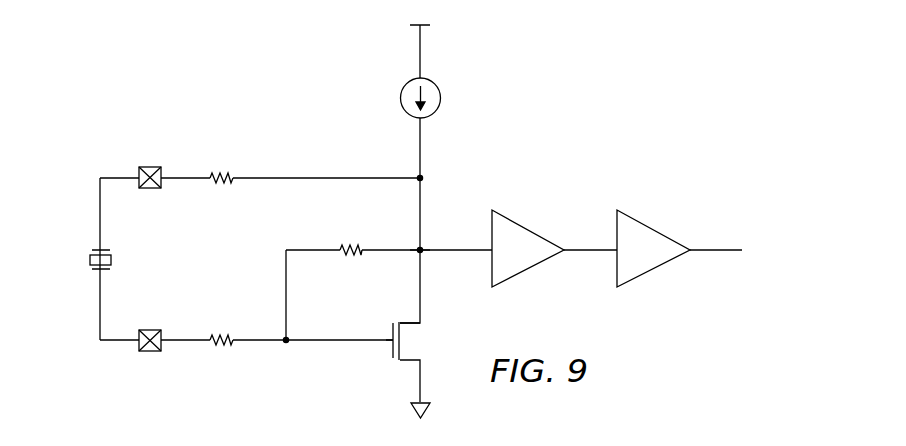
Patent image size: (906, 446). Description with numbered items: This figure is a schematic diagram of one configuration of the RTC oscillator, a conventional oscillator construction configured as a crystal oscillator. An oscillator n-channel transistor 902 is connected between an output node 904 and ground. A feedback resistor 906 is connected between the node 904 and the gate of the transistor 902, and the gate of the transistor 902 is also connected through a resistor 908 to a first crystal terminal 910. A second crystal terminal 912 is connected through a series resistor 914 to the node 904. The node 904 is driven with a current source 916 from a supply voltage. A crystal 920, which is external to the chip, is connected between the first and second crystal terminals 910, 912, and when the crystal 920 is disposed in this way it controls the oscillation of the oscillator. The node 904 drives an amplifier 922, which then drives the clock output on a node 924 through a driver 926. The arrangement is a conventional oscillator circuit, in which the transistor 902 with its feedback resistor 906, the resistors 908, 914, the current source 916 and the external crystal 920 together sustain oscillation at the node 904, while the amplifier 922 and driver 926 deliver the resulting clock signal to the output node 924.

The oscillator n-channel transistor 902 is at (392, 350).
The output node 904 is at (423, 256).
The feedback resistor 906 is at (350, 256).
The resistor 908 is at (221, 346).
The first crystal terminal 910 is at (150, 352).
The second crystal terminal 912 is at (150, 166).
The series resistor 914 is at (222, 166).
The current source 916 is at (401, 93).
The crystal 920 is at (89, 259).
The amplifier 922 is at (531, 228).
The clock output node 924 is at (716, 252).
The driver 926 is at (656, 228).